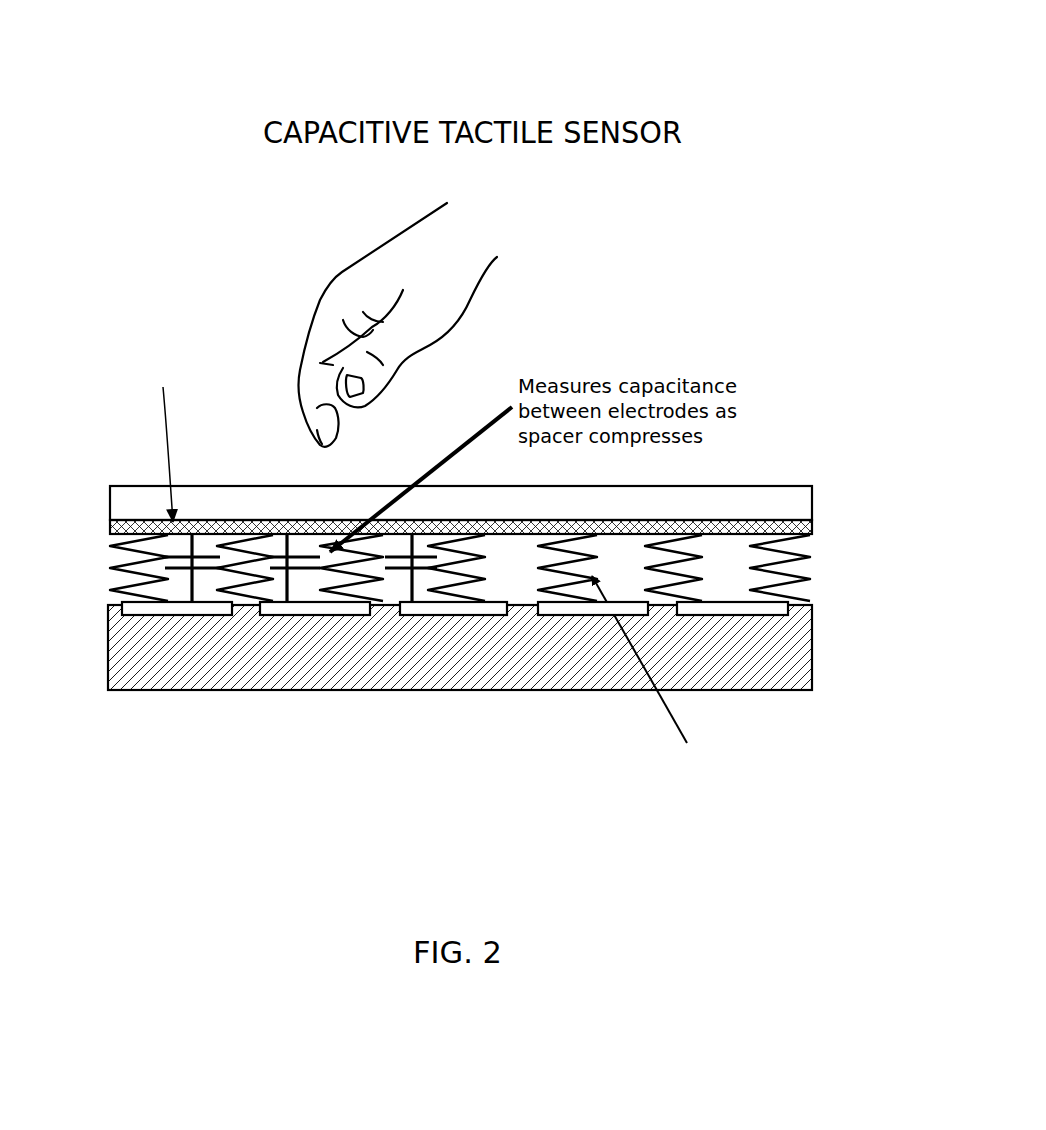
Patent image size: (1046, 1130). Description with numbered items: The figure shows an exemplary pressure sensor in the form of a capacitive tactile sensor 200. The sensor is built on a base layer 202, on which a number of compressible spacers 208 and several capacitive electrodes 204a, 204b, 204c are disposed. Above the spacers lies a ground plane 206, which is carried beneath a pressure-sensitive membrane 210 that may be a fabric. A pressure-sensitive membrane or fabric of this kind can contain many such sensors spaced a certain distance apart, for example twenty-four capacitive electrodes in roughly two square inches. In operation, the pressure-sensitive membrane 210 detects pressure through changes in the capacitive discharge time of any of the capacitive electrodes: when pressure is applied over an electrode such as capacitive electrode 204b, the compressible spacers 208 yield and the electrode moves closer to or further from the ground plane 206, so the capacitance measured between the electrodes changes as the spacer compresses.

The capacitive tactile sensor 200 is at (768, 60).
The base layer 202 is at (108, 648).
The capacitive electrode 204a is at (182, 568).
The capacitive electrode 204b is at (283, 568).
The capacitive electrode 204c is at (402, 568).
The ground plane 206 is at (109, 528).
The compressible spacers 208 is at (812, 577).
The pressure-sensitive membrane 210 is at (200, 486).